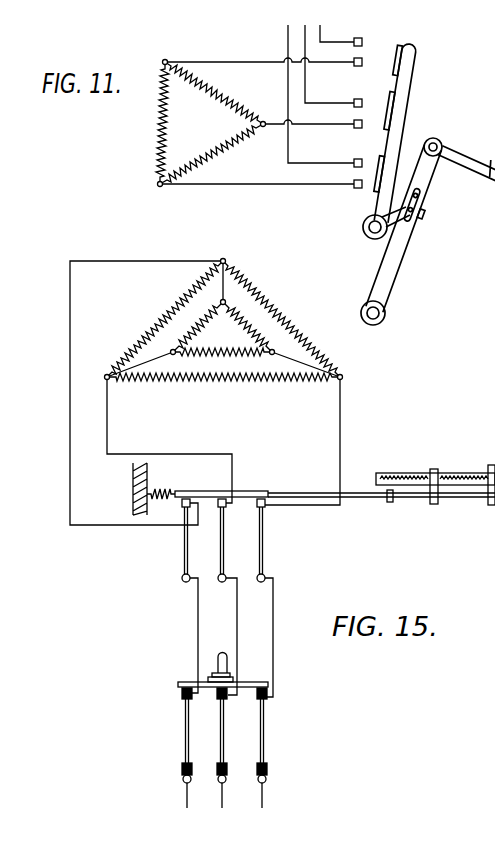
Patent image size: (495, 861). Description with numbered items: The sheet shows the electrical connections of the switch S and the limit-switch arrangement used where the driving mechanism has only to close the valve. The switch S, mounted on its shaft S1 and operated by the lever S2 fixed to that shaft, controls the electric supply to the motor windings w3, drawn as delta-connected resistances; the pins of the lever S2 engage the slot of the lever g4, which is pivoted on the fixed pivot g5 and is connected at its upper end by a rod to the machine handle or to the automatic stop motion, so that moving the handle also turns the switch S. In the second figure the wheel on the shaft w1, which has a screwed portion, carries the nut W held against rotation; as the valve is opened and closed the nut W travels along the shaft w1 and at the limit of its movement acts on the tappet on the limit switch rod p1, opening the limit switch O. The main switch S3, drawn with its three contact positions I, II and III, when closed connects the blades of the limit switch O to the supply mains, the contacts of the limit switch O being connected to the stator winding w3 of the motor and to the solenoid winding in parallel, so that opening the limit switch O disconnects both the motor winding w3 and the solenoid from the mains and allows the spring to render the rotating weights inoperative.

In FIG. 11, the stator winding w3 is at (211, 123).
In FIG. 15, the stator winding w3 is at (207, 397).
In FIG. 11, the switch S is at (407, 85).
In FIG. 11, the switch shaft S1 is at (383, 223).
In FIG. 11, the switch lever S2 is at (380, 211).
In FIG. 11, the lever g4 is at (398, 259).
In FIG. 11, the fixed pivot g5 is at (385, 313).
In FIG. 15, the limit switch rod p1 is at (290, 493).
In FIG. 15, the limit switch O is at (265, 540).
In FIG. 15, the nut W is at (437, 469).
In FIG. 15, the shaft w1 is at (462, 473).
In FIG. 15, the main switch S3 is at (267, 742).
In FIG. 15, the contact position I is at (183, 803).
In FIG. 15, the contact position II is at (246, 803).
In FIG. 15, the contact position III is at (290, 803).